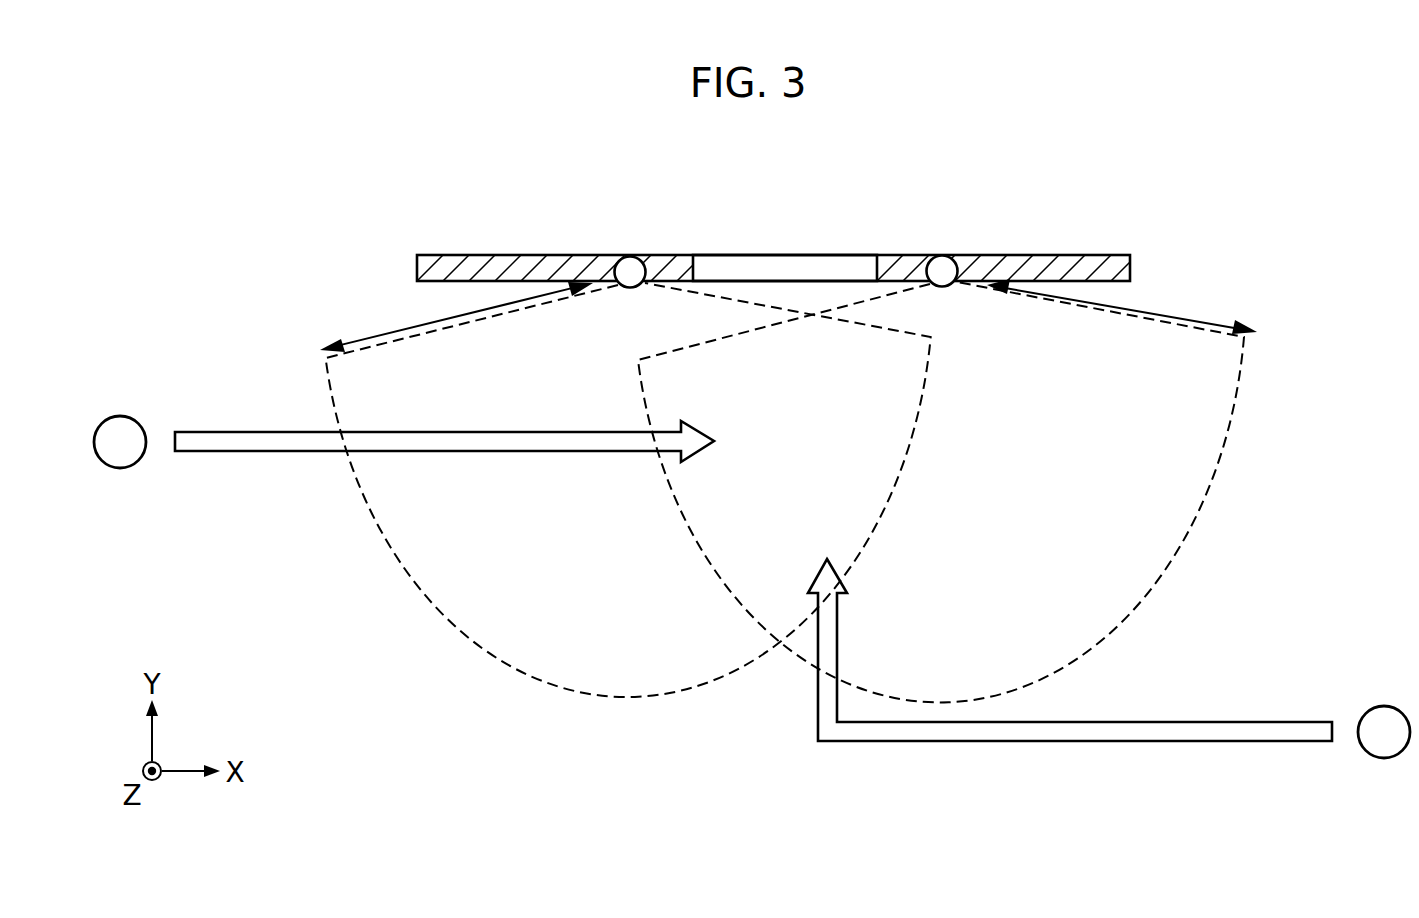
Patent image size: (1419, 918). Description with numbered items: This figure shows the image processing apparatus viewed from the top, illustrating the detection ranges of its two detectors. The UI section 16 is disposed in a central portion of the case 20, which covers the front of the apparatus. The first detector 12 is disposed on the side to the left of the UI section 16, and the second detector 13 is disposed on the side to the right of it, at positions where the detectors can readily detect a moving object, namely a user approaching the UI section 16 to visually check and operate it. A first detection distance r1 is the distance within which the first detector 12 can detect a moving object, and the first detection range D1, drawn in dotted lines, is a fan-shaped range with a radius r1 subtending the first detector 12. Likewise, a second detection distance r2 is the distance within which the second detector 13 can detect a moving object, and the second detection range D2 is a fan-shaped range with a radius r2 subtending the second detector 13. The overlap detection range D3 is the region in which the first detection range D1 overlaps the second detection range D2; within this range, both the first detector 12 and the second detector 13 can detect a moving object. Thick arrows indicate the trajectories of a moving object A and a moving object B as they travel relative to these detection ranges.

The first detector 12 is at (630, 266).
The second detector 13 is at (942, 265).
The UI section 16 is at (779, 270).
The case 20 is at (1073, 270).
The first detection range D1 is at (583, 645).
The second detection range D2 is at (1103, 562).
The overlap detection range D3 is at (764, 557).
The first detection distance r1 is at (405, 328).
The second detection distance r2 is at (1177, 320).
The moving object A is at (122, 415).
The moving object B is at (1386, 705).